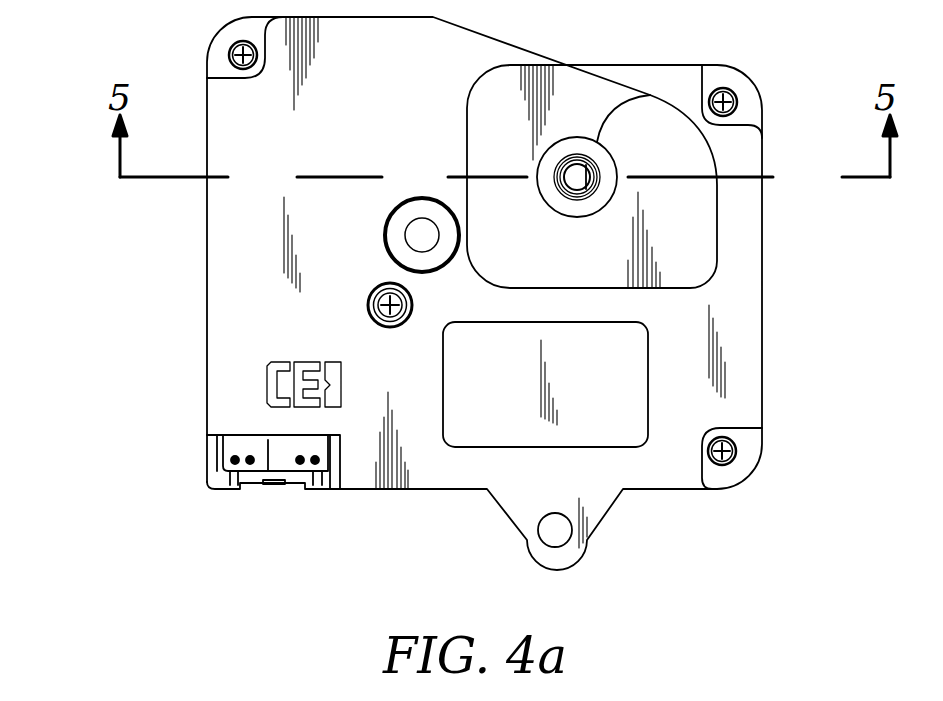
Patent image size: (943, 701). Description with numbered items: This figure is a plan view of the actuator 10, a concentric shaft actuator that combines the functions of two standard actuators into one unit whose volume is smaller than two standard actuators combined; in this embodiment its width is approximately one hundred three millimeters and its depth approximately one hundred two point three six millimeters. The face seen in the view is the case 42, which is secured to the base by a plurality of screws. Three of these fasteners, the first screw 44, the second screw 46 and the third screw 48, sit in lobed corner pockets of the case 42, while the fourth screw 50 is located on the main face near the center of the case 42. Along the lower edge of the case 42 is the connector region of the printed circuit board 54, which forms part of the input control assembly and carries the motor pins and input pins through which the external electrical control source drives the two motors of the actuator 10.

The actuator 10 is at (441, 290).
The case 42 is at (265, 228).
The first screw 44 is at (236, 46).
The second screw 46 is at (729, 88).
The third screw 48 is at (731, 460).
The fourth screw 50 is at (368, 305).
The printed circuit board 54 is at (272, 496).